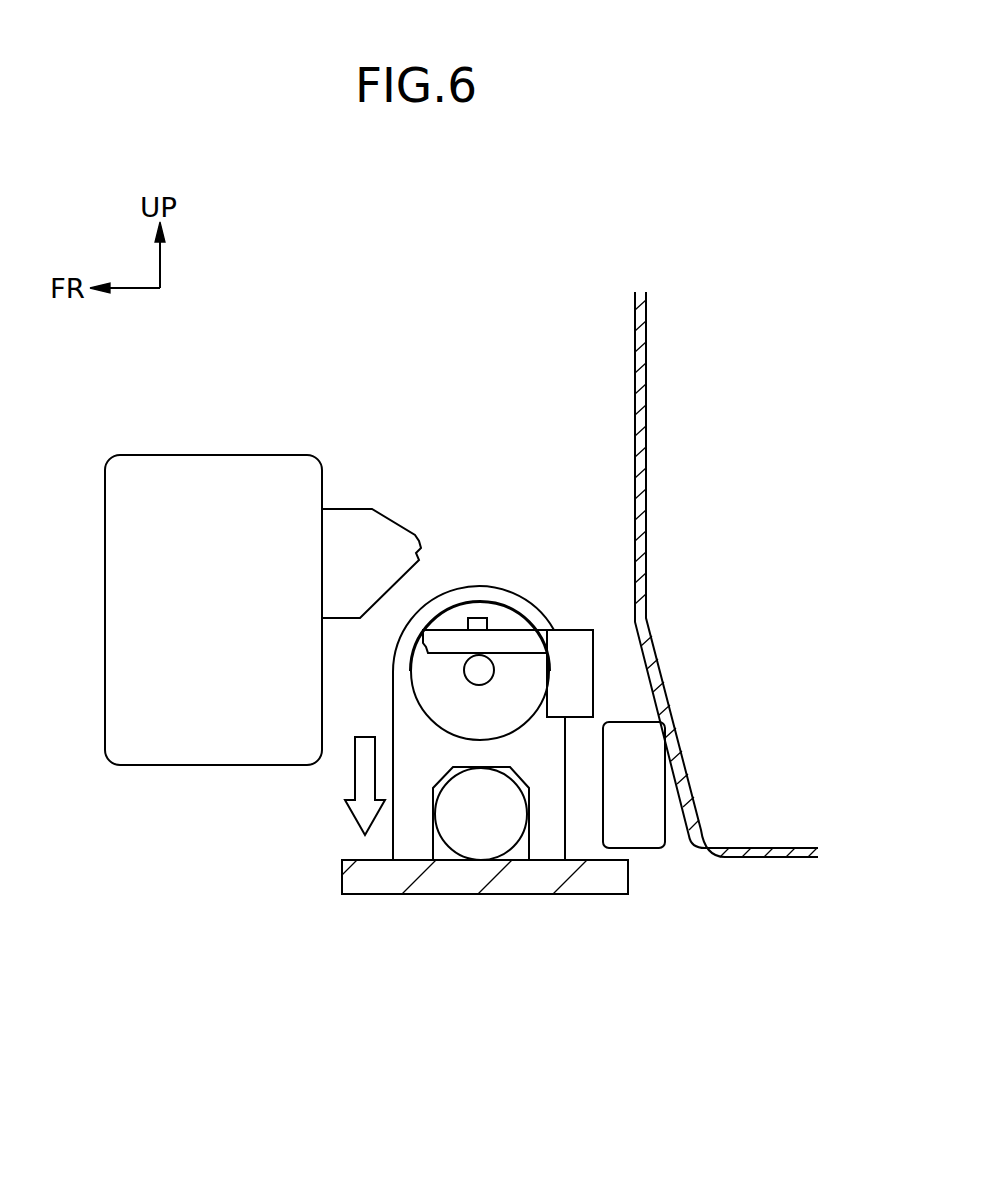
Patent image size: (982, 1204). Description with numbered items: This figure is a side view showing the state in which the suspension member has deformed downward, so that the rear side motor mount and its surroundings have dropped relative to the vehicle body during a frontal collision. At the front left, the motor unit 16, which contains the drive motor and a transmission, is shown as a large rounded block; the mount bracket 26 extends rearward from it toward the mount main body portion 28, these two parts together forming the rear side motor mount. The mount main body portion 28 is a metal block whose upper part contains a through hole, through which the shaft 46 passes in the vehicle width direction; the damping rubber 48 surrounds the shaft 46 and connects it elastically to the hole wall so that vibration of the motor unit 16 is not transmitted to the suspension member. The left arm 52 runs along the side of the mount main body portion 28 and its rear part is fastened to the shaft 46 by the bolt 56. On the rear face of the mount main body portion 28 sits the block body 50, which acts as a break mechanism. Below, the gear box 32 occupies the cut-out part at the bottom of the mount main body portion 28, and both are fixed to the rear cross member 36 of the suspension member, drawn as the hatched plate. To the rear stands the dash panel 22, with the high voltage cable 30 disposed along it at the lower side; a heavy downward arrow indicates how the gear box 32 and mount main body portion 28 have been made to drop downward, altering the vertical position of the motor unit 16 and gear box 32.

The motor unit 16 is at (210, 455).
The dash panel 22 is at (635, 387).
The mount bracket 26 is at (357, 509).
The mount main body portion 28 is at (524, 593).
The high voltage cable 30 is at (665, 832).
The gear box 32 is at (513, 852).
The rear cross member 36 is at (387, 895).
The shaft 46 is at (463, 681).
The damping rubber 48 is at (438, 716).
The block body 50 is at (593, 628).
The left arm 52 is at (440, 628).
The bolt 56 is at (478, 617).